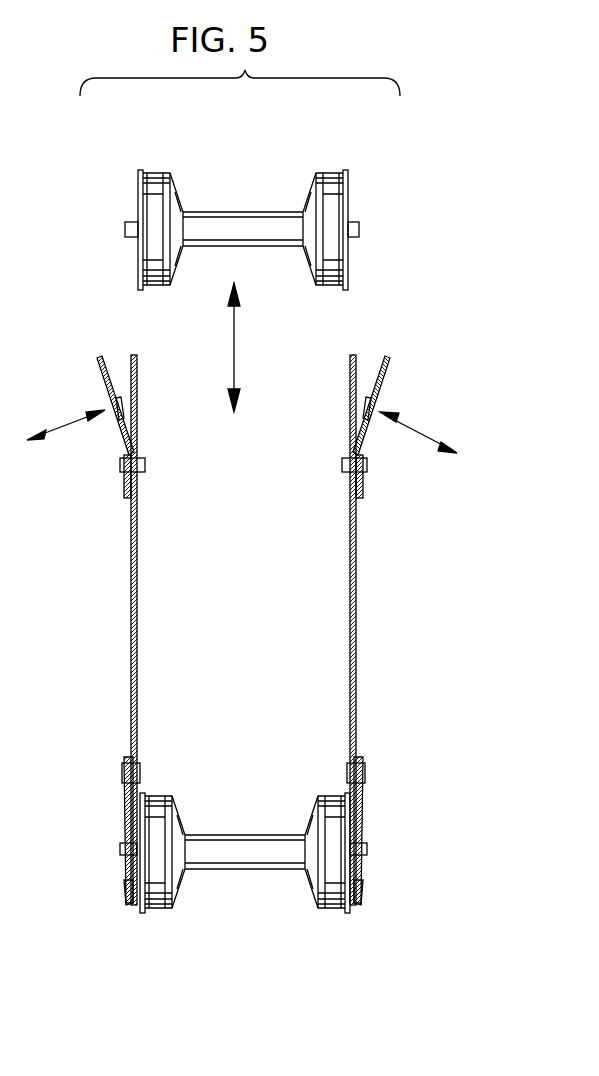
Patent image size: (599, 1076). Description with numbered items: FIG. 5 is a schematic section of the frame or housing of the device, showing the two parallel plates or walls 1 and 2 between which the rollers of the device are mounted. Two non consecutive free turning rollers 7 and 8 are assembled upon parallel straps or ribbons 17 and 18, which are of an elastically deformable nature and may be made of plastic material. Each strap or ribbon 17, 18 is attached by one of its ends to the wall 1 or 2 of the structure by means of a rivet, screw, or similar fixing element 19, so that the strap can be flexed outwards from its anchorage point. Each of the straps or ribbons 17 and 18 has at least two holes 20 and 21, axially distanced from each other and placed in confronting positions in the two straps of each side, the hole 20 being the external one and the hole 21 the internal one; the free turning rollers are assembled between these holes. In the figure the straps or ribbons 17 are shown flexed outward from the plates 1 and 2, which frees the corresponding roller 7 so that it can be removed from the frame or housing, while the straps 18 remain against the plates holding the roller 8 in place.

The plate 1 is at (131, 598).
The plate 2 is at (356, 658).
The non consecutive free turning roller 7 is at (213, 217).
The non consecutive free turning roller 8 is at (275, 852).
The strap 17 is at (98, 362).
The strap 18 is at (122, 892).
The fixing element 19 is at (120, 464).
The external hole 20 is at (110, 391).
The internal hole 21 is at (118, 433).